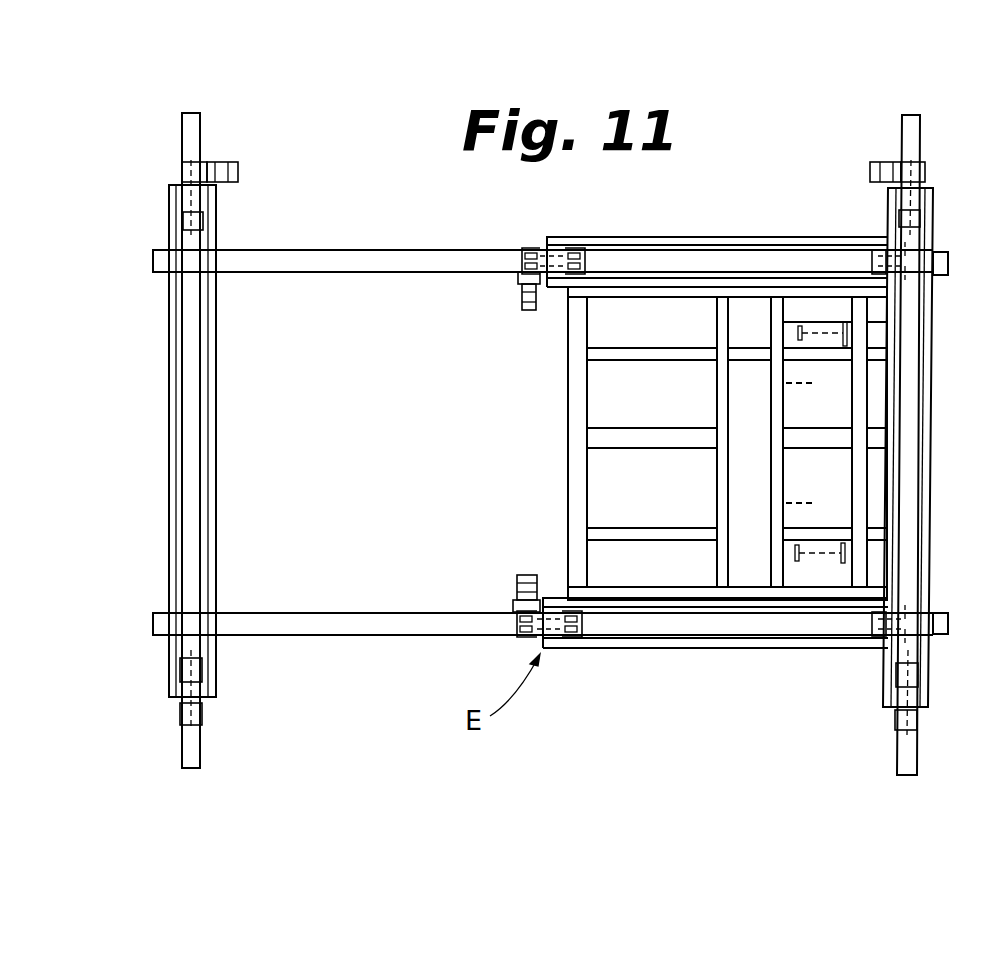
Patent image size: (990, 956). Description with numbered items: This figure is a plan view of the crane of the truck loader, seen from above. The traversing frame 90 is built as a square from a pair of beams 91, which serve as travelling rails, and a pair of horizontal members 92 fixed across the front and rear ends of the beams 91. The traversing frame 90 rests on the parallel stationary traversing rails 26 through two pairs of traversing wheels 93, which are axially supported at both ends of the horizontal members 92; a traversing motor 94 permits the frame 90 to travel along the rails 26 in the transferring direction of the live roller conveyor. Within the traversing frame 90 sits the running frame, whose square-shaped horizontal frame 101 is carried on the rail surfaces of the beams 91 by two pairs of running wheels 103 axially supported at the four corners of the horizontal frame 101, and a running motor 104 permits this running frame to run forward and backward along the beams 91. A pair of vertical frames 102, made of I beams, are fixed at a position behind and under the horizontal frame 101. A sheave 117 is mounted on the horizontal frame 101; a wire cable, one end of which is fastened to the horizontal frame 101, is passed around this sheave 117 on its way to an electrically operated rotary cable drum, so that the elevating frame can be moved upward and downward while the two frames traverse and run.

The stationary traversing rail 26 is at (917, 758).
The traversing frame 90 is at (343, 248).
The beam 91 is at (422, 256).
The horizontal member 92 is at (169, 490).
The traversing wheel 93 is at (180, 672).
The traversing motor 94 is at (240, 172).
The horizontal frame 101 is at (653, 440).
The vertical frame 102 is at (795, 553).
The running wheel 103 is at (578, 250).
The running motor 104 is at (530, 300).
The sheave 117 is at (802, 498).